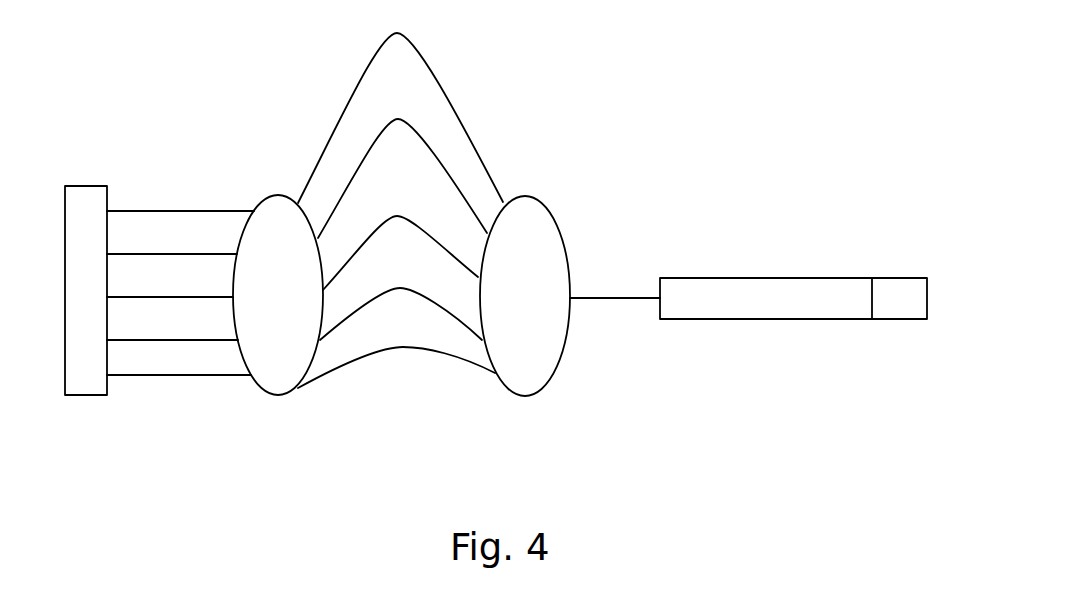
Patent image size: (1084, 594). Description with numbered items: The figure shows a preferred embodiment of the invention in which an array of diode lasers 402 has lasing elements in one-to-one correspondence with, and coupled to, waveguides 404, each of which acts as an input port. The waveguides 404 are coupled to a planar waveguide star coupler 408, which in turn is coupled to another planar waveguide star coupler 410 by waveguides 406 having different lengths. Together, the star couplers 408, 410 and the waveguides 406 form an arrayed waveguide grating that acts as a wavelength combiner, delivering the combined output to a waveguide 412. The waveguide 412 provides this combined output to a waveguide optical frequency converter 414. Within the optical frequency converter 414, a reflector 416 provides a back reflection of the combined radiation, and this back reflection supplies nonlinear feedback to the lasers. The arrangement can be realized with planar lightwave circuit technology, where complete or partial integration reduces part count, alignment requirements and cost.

The array of diode lasers 402 is at (77, 186).
The waveguides 404 is at (174, 426).
The waveguides having different lengths 406 is at (405, 388).
The planar waveguide star coupler 408 is at (263, 197).
The planar waveguide star coupler 410 is at (545, 207).
The waveguide 412 is at (615, 298).
The waveguide optical frequency converter 414 is at (782, 278).
The reflector 416 is at (872, 302).